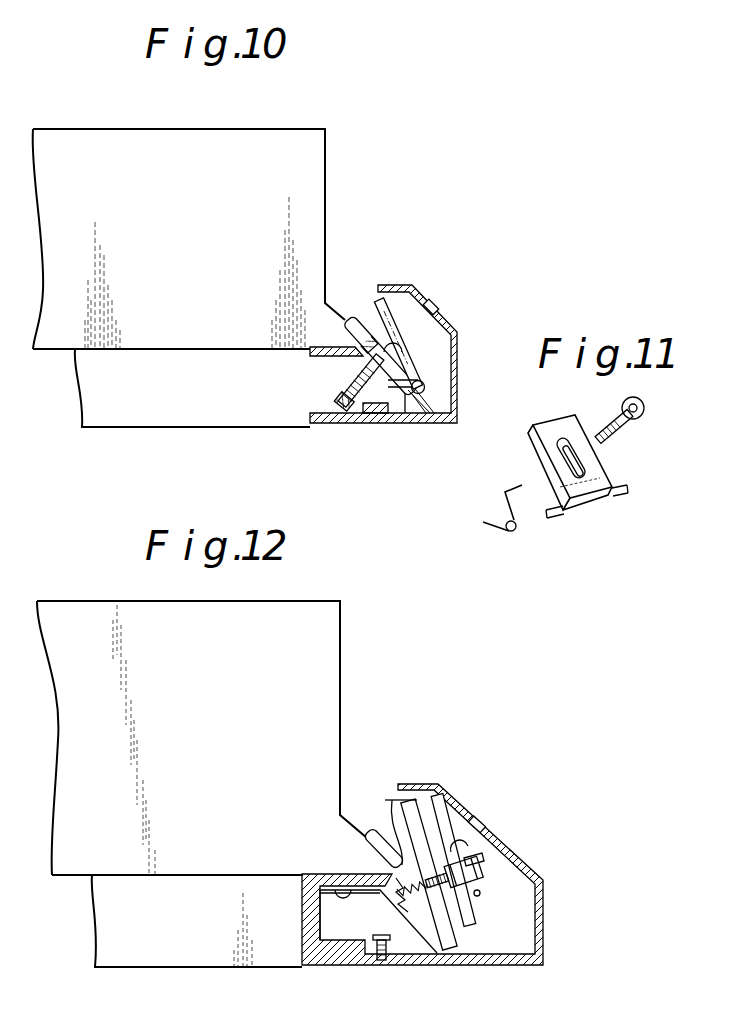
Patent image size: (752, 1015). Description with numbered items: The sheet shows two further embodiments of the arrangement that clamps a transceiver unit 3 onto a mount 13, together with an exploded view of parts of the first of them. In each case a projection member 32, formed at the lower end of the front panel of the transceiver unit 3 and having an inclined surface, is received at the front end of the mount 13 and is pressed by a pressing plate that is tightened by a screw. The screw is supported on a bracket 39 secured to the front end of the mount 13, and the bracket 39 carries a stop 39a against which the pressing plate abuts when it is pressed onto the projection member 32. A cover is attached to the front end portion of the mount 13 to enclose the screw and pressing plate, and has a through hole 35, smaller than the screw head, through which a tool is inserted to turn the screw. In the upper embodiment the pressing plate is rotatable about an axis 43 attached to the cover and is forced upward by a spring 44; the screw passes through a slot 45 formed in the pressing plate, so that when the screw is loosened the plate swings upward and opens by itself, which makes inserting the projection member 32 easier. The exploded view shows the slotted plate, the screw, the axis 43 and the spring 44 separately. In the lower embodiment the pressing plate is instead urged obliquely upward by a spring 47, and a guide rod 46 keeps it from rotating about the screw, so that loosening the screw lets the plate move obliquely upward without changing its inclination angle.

In FIG. 10, the transceiver unit 3 is at (204, 157).
In FIG. 12, the transceiver unit 3 is at (340, 660).
In FIG. 10, the mount 13 is at (177, 414).
In FIG. 12, the mount 13 is at (103, 906).
In FIG. 10, the projection member 32 is at (346, 340).
In FIG. 12, the projection member 32 is at (365, 855).
In FIG. 10, the through hole 35 is at (433, 311).
In FIG. 12, the through hole 35 is at (485, 830).
In FIG. 12, the bracket 39 is at (405, 942).
In FIG. 12, the stop 39a is at (455, 945).
In FIG. 10, the axis 43 is at (425, 386).
In FIG. 11, the axis 43 is at (623, 495).
In FIG. 10, the spring 44 is at (428, 424).
In FIG. 11, the spring 44 is at (505, 505).
In FIG. 11, the slot 45 is at (562, 442).
In FIG. 12, the guide rod 46 is at (480, 892).
In FIG. 12, the spring 47 is at (395, 840).